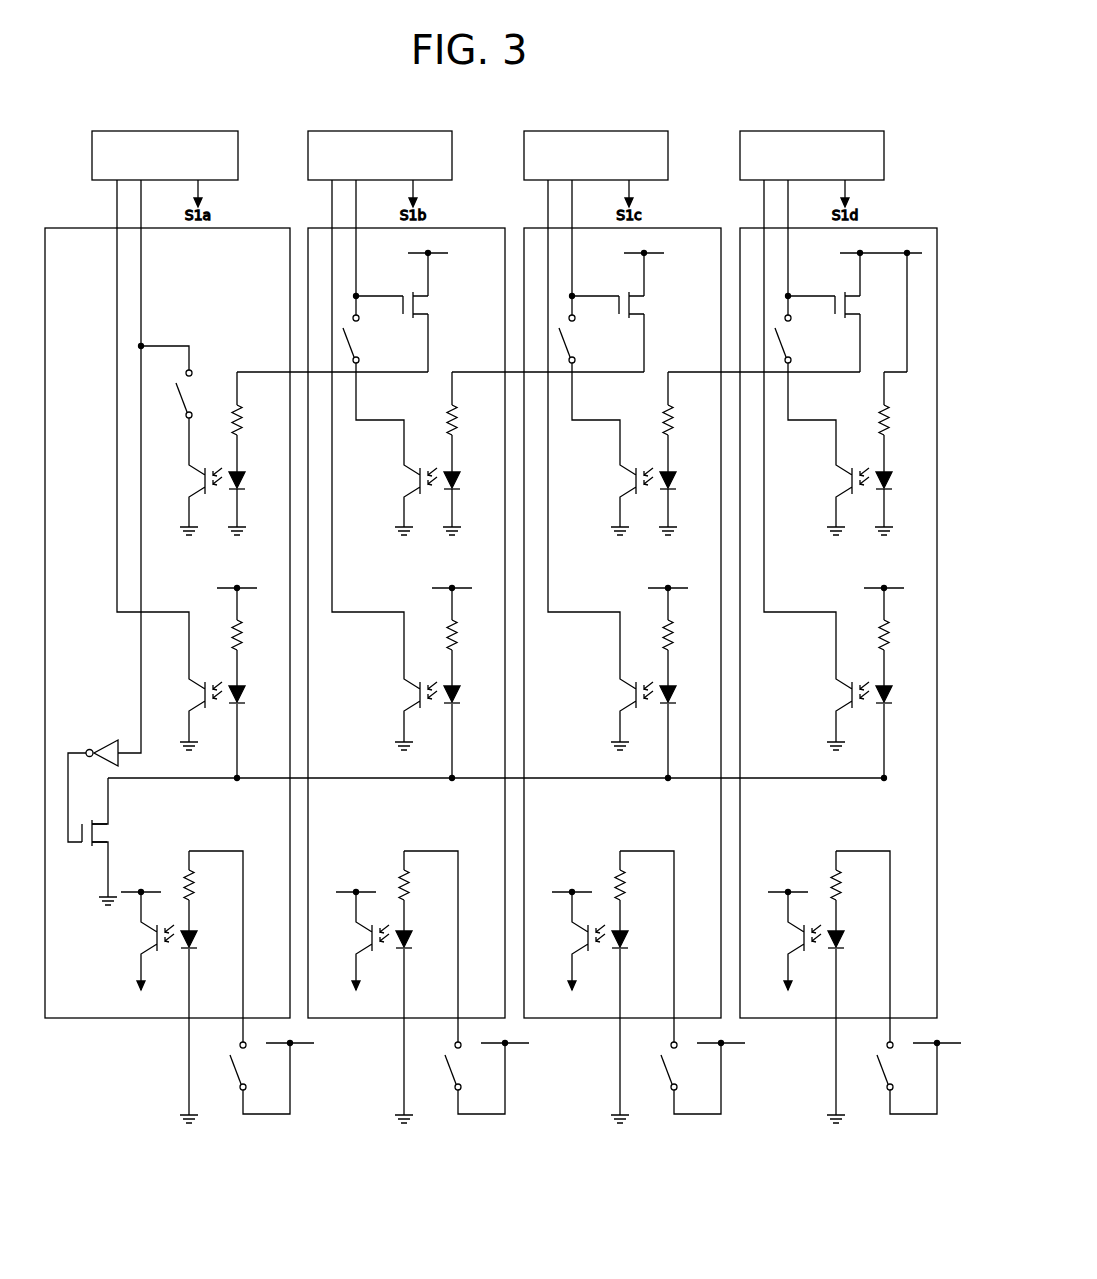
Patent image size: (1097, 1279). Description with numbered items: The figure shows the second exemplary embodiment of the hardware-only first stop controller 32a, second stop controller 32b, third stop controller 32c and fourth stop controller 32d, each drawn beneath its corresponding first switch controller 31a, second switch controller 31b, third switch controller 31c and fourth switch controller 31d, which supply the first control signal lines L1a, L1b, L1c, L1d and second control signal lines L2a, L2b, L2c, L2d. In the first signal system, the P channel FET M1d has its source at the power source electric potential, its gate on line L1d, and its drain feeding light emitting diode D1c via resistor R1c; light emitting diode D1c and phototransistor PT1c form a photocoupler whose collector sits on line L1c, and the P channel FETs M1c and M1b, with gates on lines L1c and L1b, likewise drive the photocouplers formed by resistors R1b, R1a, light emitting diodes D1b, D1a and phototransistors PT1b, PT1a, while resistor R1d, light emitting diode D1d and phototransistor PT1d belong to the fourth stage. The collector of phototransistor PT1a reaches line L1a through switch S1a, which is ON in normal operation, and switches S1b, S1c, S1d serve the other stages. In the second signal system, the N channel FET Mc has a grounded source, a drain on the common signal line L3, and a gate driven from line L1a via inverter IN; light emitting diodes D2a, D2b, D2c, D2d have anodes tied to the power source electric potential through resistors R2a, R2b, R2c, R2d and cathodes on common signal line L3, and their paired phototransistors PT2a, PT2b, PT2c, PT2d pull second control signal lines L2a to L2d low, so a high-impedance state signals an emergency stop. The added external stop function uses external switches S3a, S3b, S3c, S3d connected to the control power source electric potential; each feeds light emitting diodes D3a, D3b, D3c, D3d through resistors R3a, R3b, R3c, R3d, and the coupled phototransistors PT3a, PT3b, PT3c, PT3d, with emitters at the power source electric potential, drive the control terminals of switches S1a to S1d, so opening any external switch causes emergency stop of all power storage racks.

The first switch controller 31a is at (238, 141).
The second switch controller 31b is at (453, 141).
The third switch controller 31c is at (669, 141).
The fourth switch controller 31d is at (885, 141).
The first stop controller 32a is at (235, 228).
The second stop controller 32b is at (450, 228).
The third stop controller 32c is at (666, 228).
The fourth stop controller 32d is at (882, 228).
The first control signal line L1a is at (143, 216).
The first control signal line L1b is at (358, 216).
The first control signal line L1c is at (574, 216).
The first control signal line L1d is at (790, 216).
The second control signal line L2a is at (115, 216).
The second control signal line L2b is at (330, 216).
The second control signal line L2c is at (546, 216).
The second control signal line L2d is at (762, 216).
The common signal line L3 is at (246, 778).
The switch S1a is at (200, 410).
The switch S1b is at (373, 383).
The switch S1c is at (589, 383).
The switch S1d is at (805, 383).
The external switch S3a is at (272, 1068).
The external switch S3b is at (487, 1068).
The external switch S3c is at (703, 1068).
The external switch S3d is at (919, 1068).
The P channel FET M1b is at (410, 303).
The P channel FET M1c is at (625, 303).
The P channel FET M1d is at (854, 303).
The N channel FET Mc is at (107, 841).
The inverter IN is at (110, 746).
The resistor R1a is at (251, 422).
The resistor R1b is at (466, 422).
The resistor R1c is at (681, 422).
The resistor R1d is at (898, 422).
The resistor R2a is at (243, 627).
The resistor R2b is at (459, 627).
The resistor R2c is at (674, 627).
The resistor R2d is at (891, 627).
The resistor R3a is at (213, 948).
The resistor R3b is at (428, 948).
The resistor R3c is at (644, 948).
The resistor R3d is at (860, 948).
The light emitting diode D1a is at (251, 503).
The light emitting diode D1b is at (467, 503).
The light emitting diode D1c is at (682, 503).
The light emitting diode D1d is at (899, 503).
The light emitting diode D2a is at (252, 733).
The light emitting diode D2b is at (467, 733).
The light emitting diode D2c is at (682, 733).
The light emitting diode D2d is at (899, 733).
The light emitting diode D3a is at (203, 1027).
The light emitting diode D3b is at (419, 1027).
The light emitting diode D3c is at (634, 1027).
The light emitting diode D3d is at (851, 1027).
The phototransistor PT1a is at (185, 493).
The phototransistor PT1b is at (400, 493).
The phototransistor PT1c is at (616, 493).
The phototransistor PT1d is at (832, 493).
The phototransistor PT2a is at (185, 707).
The phototransistor PT2b is at (400, 707).
The phototransistor PT2c is at (616, 707).
The phototransistor PT2d is at (832, 707).
The phototransistor PT3a is at (137, 942).
The phototransistor PT3b is at (352, 942).
The phototransistor PT3c is at (568, 942).
The phototransistor PT3d is at (784, 942).